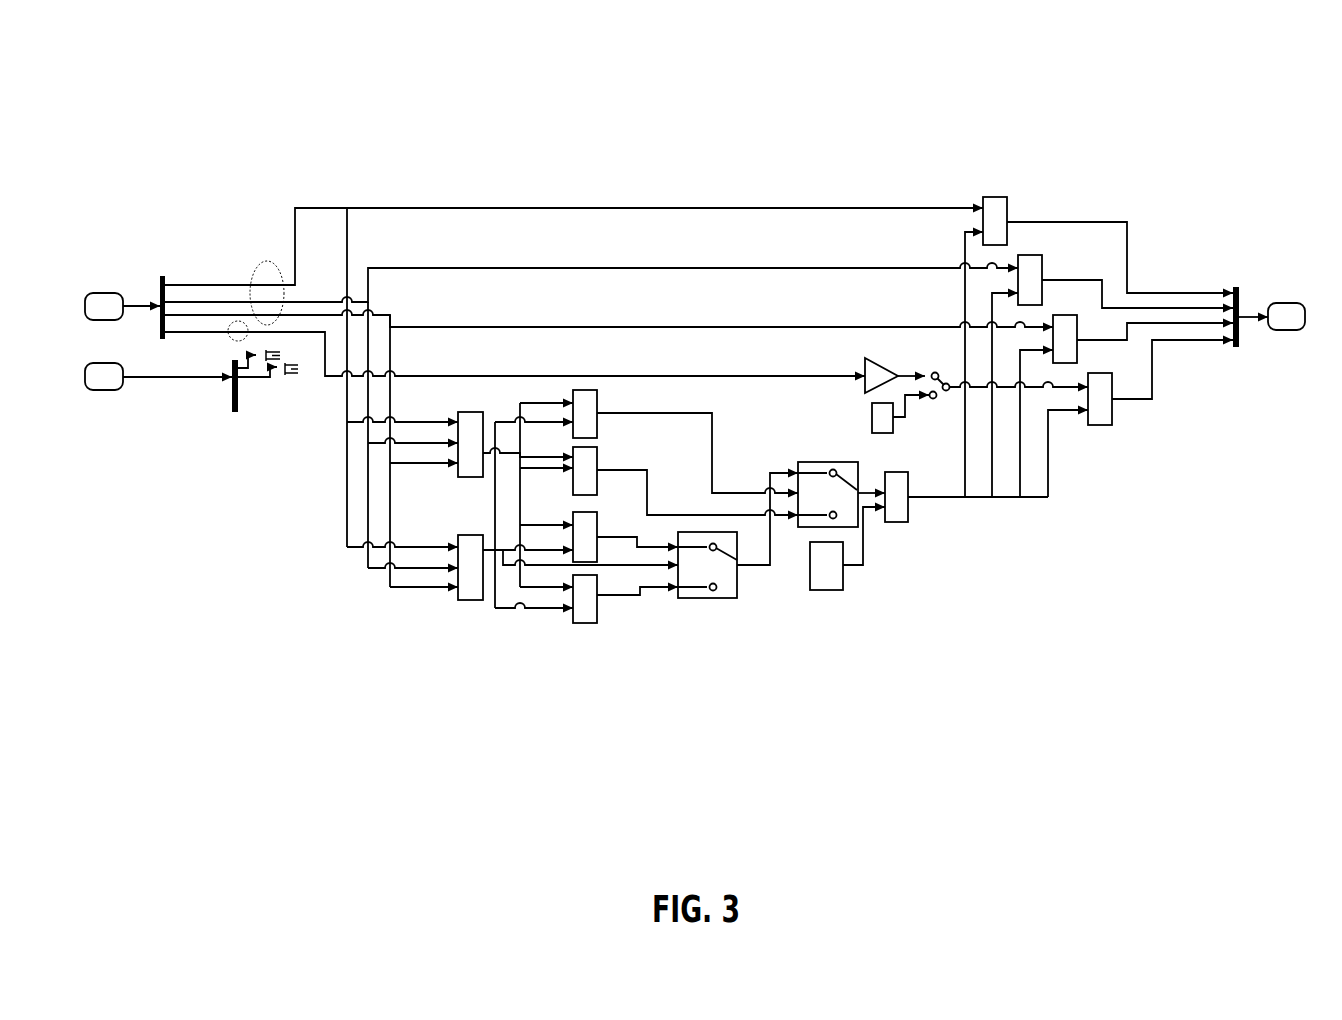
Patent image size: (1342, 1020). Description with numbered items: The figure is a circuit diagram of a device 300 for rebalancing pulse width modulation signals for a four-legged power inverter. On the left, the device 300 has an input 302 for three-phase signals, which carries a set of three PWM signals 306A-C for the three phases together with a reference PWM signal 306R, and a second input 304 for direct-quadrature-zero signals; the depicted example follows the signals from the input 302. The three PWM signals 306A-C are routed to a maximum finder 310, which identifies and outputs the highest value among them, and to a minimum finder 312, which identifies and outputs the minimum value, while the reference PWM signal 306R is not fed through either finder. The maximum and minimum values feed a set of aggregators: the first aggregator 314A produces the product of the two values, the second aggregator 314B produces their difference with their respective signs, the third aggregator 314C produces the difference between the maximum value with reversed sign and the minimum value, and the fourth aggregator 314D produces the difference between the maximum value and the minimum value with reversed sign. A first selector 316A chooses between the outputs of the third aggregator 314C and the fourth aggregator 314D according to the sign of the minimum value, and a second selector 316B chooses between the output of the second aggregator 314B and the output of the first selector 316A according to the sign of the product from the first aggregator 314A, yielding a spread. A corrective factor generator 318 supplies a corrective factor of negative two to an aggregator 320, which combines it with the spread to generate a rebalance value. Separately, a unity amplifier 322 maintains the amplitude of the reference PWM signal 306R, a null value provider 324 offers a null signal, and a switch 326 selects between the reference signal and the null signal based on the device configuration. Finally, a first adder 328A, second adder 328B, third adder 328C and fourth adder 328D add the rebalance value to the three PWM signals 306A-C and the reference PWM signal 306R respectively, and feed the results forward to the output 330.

The device 300 is at (668, 70).
The input 302 is at (103, 293).
The input 304 is at (95, 425).
The pulse width modulated (PWM) signals 306A-C is at (267, 260).
The reference PWM signal 306R is at (238, 323).
The maximum finder 310 is at (473, 412).
The minimum finder 312 is at (470, 602).
The first aggregator 314A is at (585, 390).
The second aggregator 314B is at (600, 458).
The third aggregator 314C is at (600, 548).
The fourth aggregator 314D is at (587, 623).
The first selector 316A is at (722, 600).
The second selector 316B is at (827, 462).
The corrective factor generator 318 is at (827, 590).
The aggregator 320 is at (897, 522).
The unity amplifier 322 is at (885, 358).
The null value provider 324 is at (883, 433).
The switch 326 is at (934, 398).
The first adder 328A is at (995, 197).
The second adder 328B is at (1032, 255).
The third adder 328C is at (1078, 348).
The fourth adder 328D is at (1097, 427).
The output 330 is at (1285, 303).